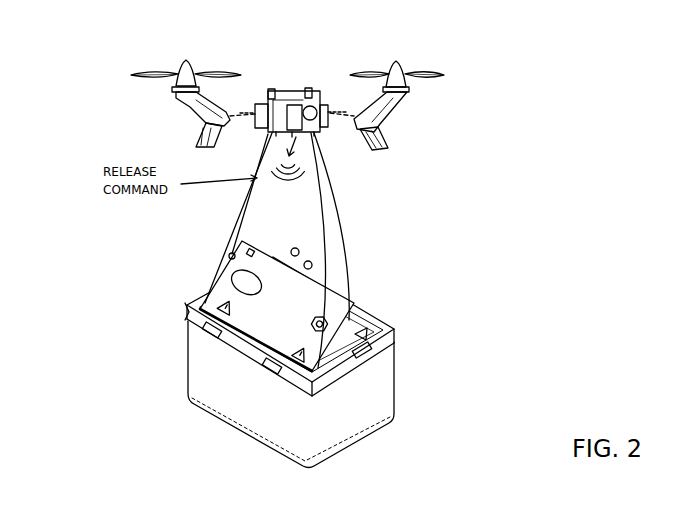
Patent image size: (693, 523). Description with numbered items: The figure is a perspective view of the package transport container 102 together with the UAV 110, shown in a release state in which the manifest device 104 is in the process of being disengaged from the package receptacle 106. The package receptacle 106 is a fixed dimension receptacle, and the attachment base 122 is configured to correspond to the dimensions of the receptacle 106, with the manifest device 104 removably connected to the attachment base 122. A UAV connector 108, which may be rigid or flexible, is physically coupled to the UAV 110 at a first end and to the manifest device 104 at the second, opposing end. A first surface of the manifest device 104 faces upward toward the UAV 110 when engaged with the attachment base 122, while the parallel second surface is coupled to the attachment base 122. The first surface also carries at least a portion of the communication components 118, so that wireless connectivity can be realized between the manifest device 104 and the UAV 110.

The package transport container 102 is at (306, 300).
The manifest device 104 is at (350, 290).
The package receptacle 106 is at (396, 399).
The UAV connector 108 is at (345, 222).
The UAV 110 is at (392, 111).
The communication components 118 is at (309, 261).
The attachment base 122 is at (188, 314).